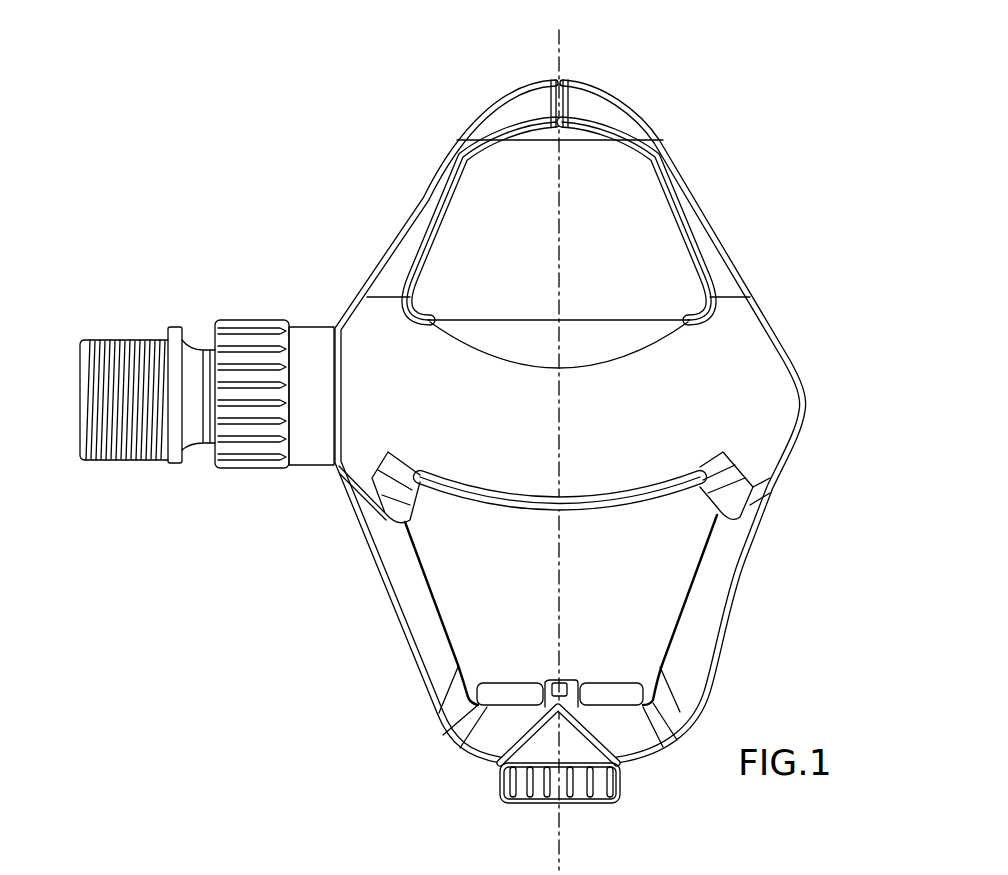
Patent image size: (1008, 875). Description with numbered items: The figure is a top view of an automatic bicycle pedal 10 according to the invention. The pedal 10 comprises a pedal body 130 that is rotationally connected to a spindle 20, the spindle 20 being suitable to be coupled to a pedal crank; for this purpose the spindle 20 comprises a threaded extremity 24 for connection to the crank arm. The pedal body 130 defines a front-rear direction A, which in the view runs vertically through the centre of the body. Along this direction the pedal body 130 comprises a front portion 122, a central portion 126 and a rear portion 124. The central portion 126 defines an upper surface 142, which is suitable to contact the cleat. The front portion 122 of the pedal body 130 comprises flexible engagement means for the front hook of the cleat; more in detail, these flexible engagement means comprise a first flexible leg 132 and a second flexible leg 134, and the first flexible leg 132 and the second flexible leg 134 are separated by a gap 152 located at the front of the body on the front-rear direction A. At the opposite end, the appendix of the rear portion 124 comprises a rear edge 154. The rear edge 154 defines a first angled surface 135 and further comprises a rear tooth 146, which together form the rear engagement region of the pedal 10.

The front-rear direction A is at (557, 62).
The automatic bicycle pedal 10 is at (579, 411).
The spindle 20 is at (193, 352).
The threaded extremity 24 is at (93, 450).
The front portion 122 is at (614, 81).
The rear portion 124 is at (431, 752).
The central portion 126 is at (703, 403).
The pedal body 130 is at (730, 320).
The first flexible leg 132 is at (464, 158).
The second flexible leg 134 is at (653, 150).
The first angled surface 135 is at (509, 678).
The upper surface 142 is at (480, 450).
The rear tooth 146 is at (562, 683).
The gap 152 is at (551, 104).
The rear edge 154 is at (617, 682).